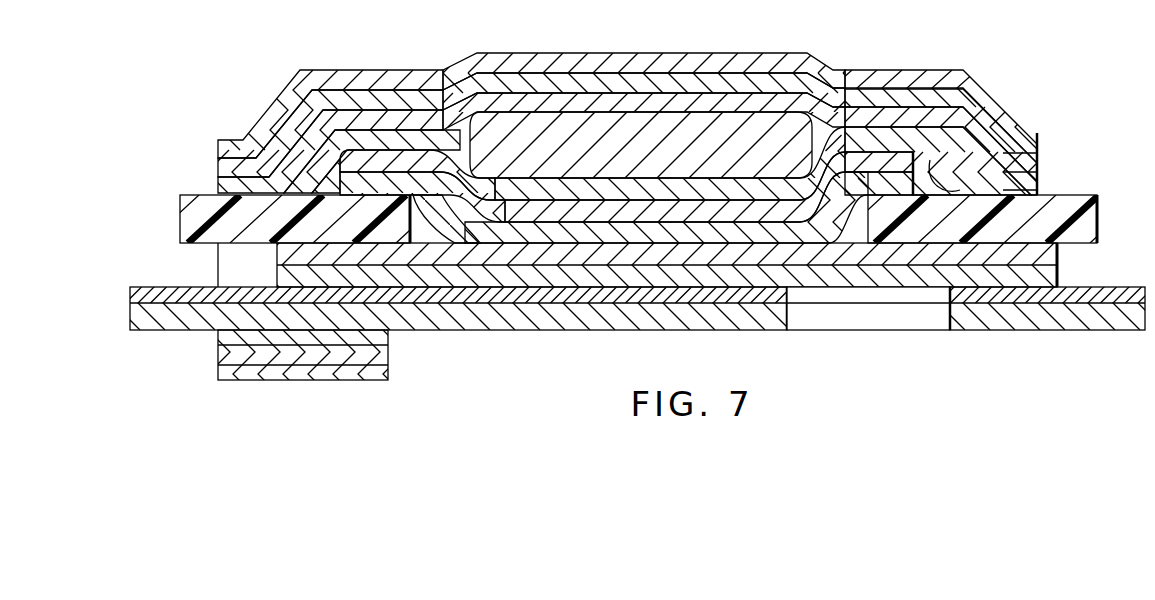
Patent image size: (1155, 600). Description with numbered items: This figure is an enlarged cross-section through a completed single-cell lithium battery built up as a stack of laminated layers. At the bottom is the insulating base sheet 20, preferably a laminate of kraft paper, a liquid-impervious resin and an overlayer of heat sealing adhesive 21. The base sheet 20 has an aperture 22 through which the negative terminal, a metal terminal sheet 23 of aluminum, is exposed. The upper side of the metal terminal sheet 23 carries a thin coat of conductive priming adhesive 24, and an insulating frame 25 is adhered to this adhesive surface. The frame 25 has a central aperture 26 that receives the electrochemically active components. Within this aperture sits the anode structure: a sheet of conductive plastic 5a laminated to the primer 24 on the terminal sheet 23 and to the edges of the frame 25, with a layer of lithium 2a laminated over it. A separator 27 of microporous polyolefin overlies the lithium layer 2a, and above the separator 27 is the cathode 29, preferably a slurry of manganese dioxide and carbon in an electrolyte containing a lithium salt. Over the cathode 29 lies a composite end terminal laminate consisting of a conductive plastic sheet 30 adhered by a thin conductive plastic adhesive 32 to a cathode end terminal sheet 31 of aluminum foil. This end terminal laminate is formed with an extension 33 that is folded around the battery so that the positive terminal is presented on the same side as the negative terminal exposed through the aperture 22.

The layer of lithium 2a is at (915, 163).
The sheet of conductive plastic 5a is at (612, 233).
The insulating base sheet 20 is at (697, 323).
The heat sealing adhesive 21 is at (1098, 287).
The aperture 22 is at (948, 312).
The metal terminal sheet 23 is at (878, 273).
The conductive priming adhesive 24 is at (283, 256).
The insulating frame 25 is at (192, 216).
The central aperture 26 is at (413, 200).
The separator 27 is at (660, 176).
The cathode 29 is at (572, 130).
The sheet of conductive plastic 30 is at (1032, 188).
The cathode end terminal sheet 31 is at (742, 53).
The conductive plastic adhesive 32 is at (1031, 156).
The extension 33 is at (306, 391).